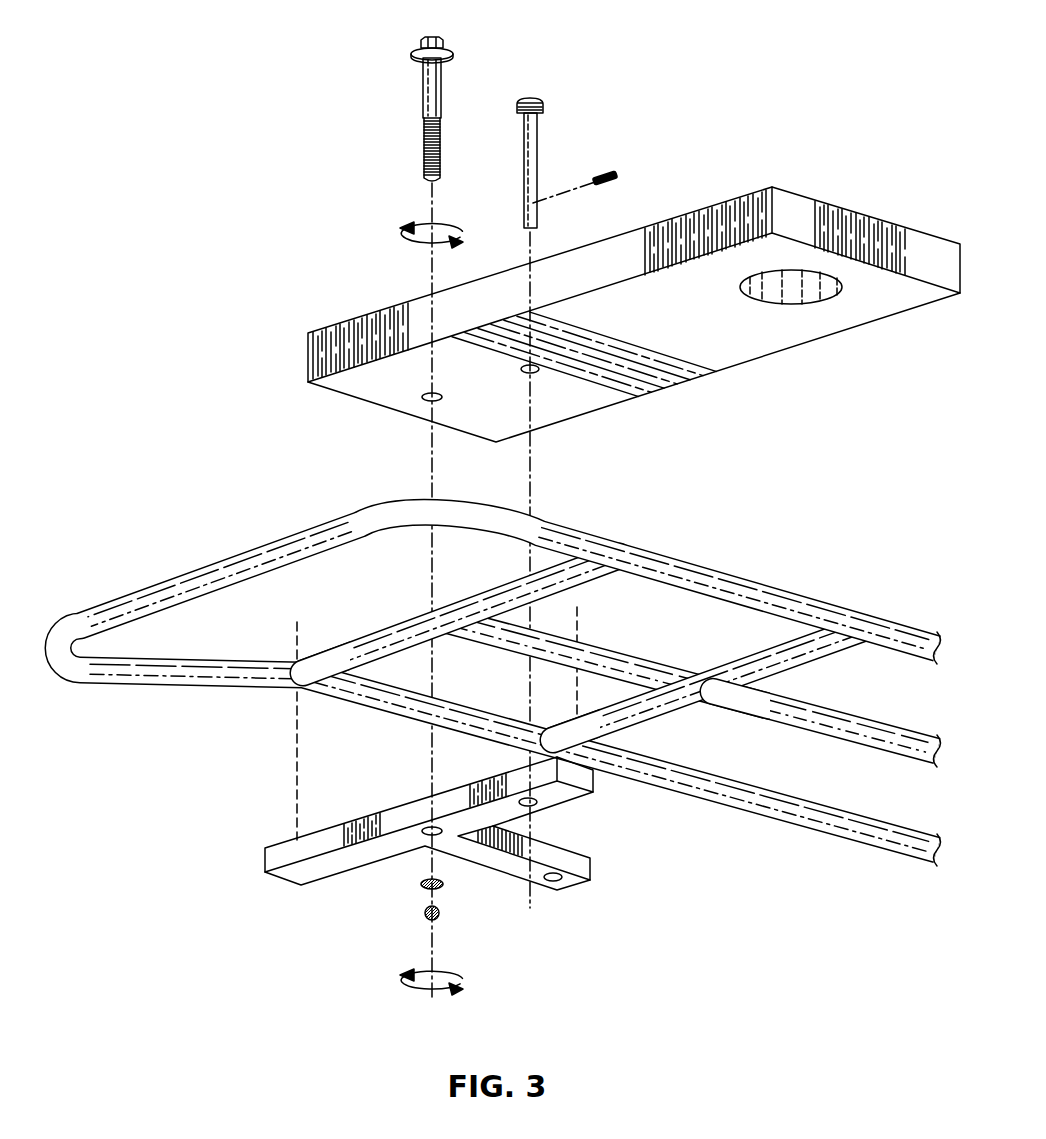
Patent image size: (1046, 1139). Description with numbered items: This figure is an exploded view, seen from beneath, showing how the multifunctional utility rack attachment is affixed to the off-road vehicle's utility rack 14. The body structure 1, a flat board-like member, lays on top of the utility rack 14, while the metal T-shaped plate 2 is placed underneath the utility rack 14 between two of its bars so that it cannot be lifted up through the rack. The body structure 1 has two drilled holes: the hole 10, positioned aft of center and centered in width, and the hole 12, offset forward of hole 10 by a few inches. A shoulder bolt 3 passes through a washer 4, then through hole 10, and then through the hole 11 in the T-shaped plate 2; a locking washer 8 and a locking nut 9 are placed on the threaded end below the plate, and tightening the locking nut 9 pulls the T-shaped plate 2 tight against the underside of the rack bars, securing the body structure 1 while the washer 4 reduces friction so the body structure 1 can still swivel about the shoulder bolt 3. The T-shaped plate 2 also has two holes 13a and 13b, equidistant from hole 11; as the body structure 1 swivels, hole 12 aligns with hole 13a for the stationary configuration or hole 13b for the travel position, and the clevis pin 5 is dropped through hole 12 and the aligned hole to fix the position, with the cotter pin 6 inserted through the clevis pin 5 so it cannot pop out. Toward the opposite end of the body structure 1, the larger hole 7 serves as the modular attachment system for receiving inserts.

The body structure 1 is at (728, 332).
The metal T-shaped plate 2 is at (318, 868).
The shoulder bolt 3 is at (428, 42).
The washer 4 is at (444, 52).
The clevis pin 5 is at (537, 130).
The cotter pin 6 is at (610, 178).
The hole 7 is at (808, 296).
The locking washer 8 is at (421, 884).
The locking nut 9 is at (440, 913).
The hole 10 is at (428, 401).
The hole 11 is at (431, 829).
The hole 12 is at (538, 372).
The hole 13a is at (537, 804).
The hole 13b is at (560, 879).
The utility rack 14 is at (858, 612).